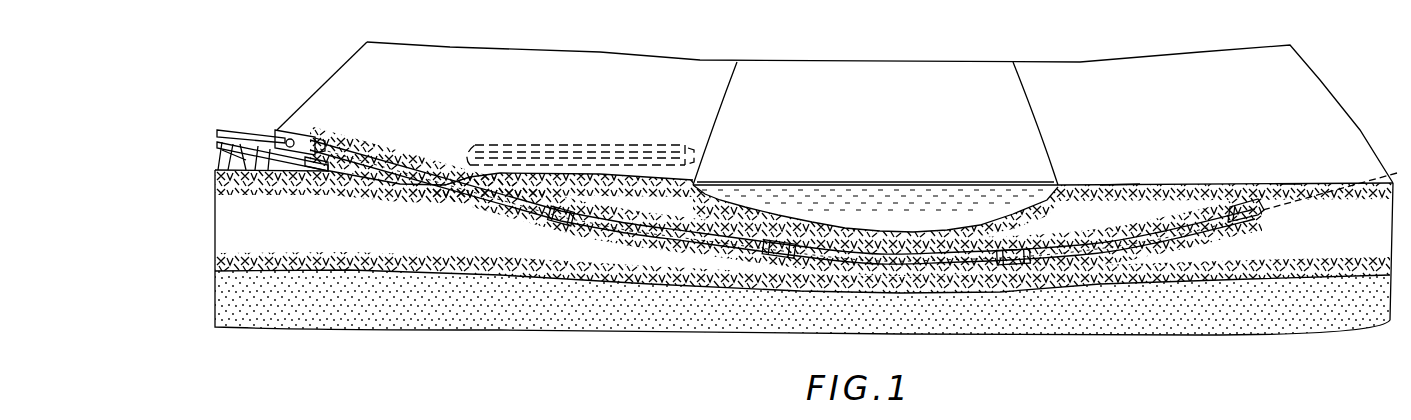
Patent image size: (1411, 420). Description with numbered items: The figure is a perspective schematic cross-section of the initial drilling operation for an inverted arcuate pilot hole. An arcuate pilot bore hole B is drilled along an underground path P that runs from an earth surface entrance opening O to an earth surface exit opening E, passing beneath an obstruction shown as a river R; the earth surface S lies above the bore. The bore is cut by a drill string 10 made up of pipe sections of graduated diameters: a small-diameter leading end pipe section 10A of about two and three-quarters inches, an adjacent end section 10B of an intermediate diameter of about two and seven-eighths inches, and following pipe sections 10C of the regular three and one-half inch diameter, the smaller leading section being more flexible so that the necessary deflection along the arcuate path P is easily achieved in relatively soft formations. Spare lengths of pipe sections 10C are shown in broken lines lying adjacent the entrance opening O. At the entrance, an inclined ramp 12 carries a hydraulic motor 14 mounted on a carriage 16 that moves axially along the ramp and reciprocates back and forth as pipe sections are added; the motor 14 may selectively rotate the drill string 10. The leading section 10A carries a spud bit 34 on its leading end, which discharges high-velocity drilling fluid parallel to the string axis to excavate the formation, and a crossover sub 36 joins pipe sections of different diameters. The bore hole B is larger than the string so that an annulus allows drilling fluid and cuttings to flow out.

The drill string 10 is at (818, 204).
The leading end pipe section 10A is at (1142, 240).
The adjacent end section 10B is at (893, 265).
The following pipe sections 10C is at (580, 143).
The inclined ramp 12 is at (262, 170).
The hydraulic motor 14 is at (303, 140).
The carriage 16 is at (249, 122).
The spud bit 34 is at (1252, 215).
The crossover sub 36 is at (1013, 262).
The pilot bore hole B is at (590, 226).
The earth surface exit opening E is at (1380, 185).
The earth surface entrance opening O is at (461, 179).
The underground path P is at (1290, 183).
The river R is at (882, 130).
The ground surface S is at (1120, 181).